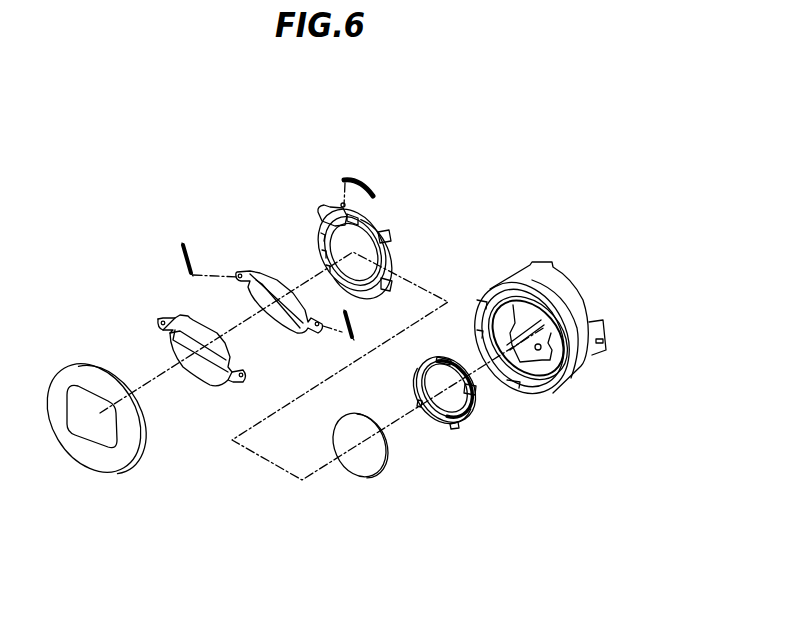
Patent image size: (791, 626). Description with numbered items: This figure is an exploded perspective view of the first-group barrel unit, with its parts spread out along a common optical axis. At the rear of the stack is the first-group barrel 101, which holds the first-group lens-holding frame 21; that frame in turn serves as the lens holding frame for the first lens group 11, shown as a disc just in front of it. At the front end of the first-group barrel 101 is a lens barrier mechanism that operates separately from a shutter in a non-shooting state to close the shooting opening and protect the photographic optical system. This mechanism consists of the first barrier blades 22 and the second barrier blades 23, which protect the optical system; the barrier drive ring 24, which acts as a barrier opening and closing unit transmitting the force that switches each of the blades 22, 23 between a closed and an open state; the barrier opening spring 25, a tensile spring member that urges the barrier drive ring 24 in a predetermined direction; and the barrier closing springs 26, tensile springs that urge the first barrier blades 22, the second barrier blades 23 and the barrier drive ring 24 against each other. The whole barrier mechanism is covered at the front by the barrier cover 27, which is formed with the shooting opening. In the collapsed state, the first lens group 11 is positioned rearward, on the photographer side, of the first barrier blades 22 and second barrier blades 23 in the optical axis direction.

The first lens group 11 is at (362, 455).
The first-group lens-holding frame 21 is at (453, 427).
The first barrier blades 22 is at (173, 320).
The second barrier blades 23 is at (257, 270).
The barrier drive ring 24 is at (322, 207).
The barrier opening spring 25 is at (357, 180).
The barrier closing springs 26 is at (182, 243).
The barrier cover 27 is at (62, 384).
The first-group barrel 101 is at (577, 357).